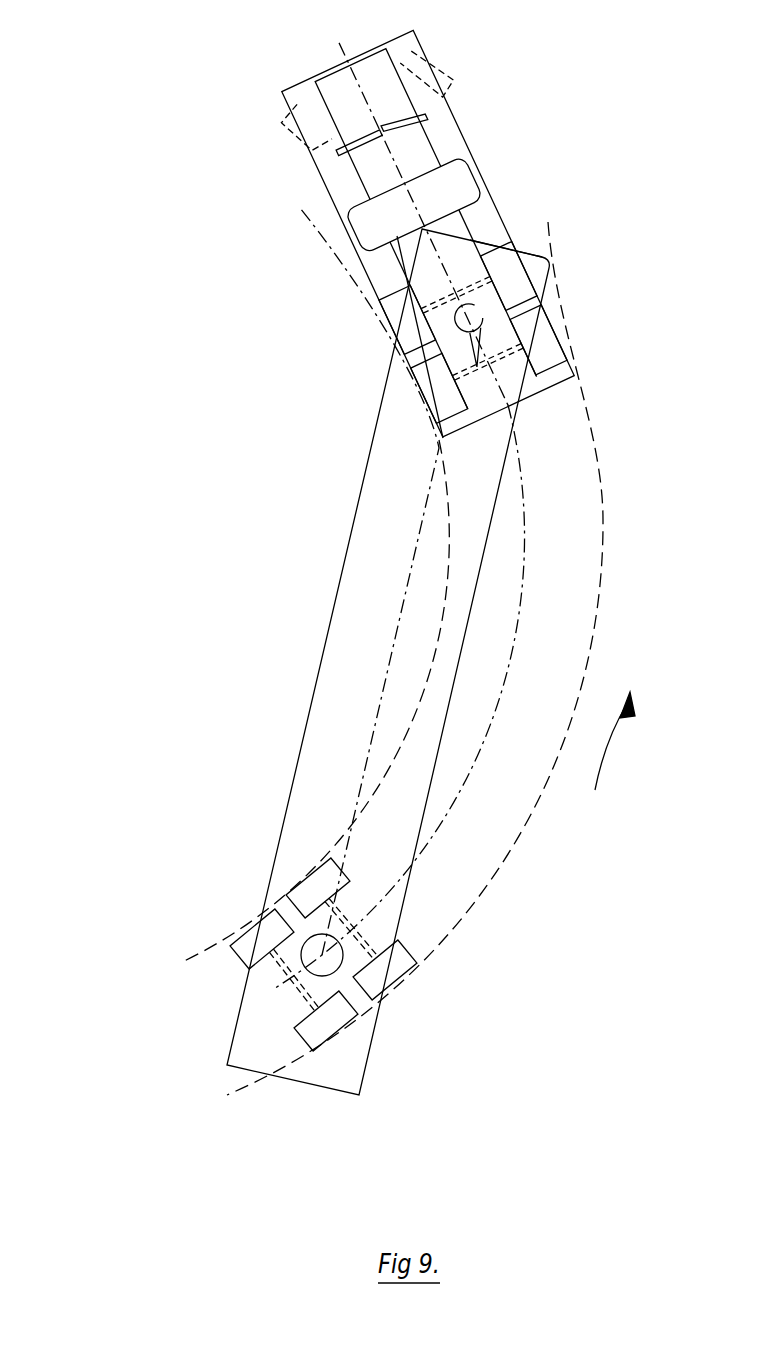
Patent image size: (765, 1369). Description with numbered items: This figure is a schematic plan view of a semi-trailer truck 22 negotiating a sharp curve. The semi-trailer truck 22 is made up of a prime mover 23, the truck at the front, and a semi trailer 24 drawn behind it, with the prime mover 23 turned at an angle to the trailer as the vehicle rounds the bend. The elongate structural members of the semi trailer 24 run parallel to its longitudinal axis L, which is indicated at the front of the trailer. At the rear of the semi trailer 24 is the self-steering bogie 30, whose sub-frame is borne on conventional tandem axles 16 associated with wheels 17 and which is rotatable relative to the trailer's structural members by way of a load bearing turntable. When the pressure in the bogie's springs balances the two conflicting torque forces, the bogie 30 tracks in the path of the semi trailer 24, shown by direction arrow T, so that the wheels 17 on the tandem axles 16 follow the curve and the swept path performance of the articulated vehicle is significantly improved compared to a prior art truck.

The semi-trailer truck 22 is at (128, 193).
The prime mover 23 is at (324, 182).
The semi trailer 24 is at (341, 568).
The tandem axles 16 is at (303, 892).
The wheels 17 is at (268, 927).
The self-steering bogie 30 is at (343, 948).
The longitudinal axis L is at (484, 250).
The direction arrow T is at (618, 741).